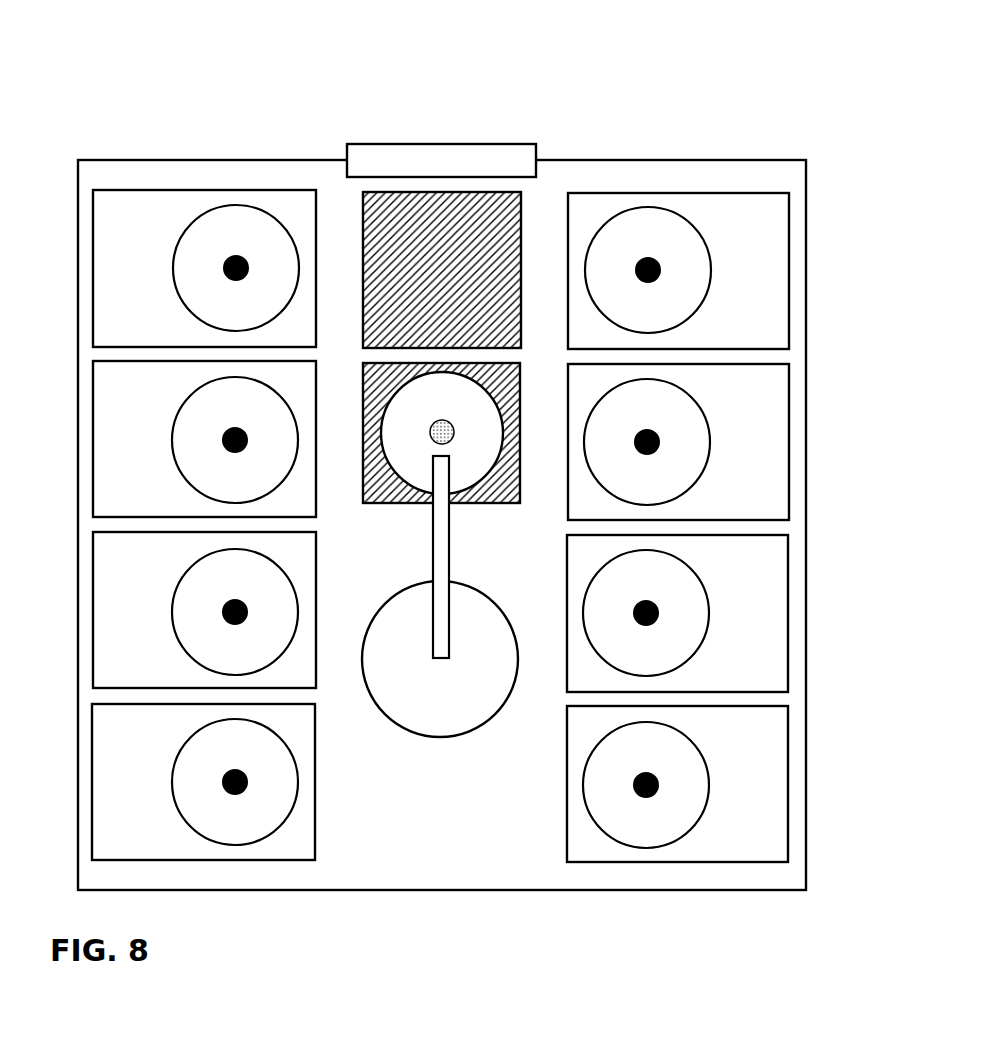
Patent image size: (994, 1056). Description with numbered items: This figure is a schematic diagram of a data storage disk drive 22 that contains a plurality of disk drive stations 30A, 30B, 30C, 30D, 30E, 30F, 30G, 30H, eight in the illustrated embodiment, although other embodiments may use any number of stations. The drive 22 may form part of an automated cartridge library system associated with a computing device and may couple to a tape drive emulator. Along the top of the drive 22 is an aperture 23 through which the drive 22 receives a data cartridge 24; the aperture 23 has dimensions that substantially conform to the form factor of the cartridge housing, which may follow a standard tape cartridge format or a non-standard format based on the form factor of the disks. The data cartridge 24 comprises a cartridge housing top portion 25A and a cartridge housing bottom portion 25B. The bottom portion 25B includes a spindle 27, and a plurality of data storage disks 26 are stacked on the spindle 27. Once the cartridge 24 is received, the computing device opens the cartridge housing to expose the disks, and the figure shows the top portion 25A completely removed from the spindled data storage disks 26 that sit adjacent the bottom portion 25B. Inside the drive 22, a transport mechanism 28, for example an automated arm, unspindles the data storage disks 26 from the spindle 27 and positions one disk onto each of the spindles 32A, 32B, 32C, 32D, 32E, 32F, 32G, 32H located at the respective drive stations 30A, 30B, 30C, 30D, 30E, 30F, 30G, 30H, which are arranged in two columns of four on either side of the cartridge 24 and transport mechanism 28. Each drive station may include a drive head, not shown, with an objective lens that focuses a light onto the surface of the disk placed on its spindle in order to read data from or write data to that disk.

The data storage disk drive 22 is at (207, 65).
The aperture 23 is at (458, 143).
The data cartridge 24 is at (439, 224).
The cartridge housing top portion 25A is at (378, 253).
The cartridge housing bottom portion 25B is at (378, 381).
The data storage disks 26 is at (465, 455).
The spindle 27 is at (442, 422).
The transport mechanism 28 is at (455, 705).
The disk drive station 30A is at (170, 253).
The disk drive station 30B is at (170, 424).
The disk drive station 30C is at (171, 595).
The disk drive station 30D is at (170, 767).
The disk drive station 30E is at (713, 256).
The disk drive station 30F is at (713, 420).
The disk drive station 30G is at (713, 591).
The disk drive station 30H is at (713, 761).
The spindle 32A is at (218, 268).
The spindle 32B is at (218, 440).
The spindle 32C is at (218, 612).
The spindle 32D is at (218, 782).
The spindle 32E is at (666, 270).
The spindle 32F is at (666, 442).
The spindle 32G is at (666, 613).
The spindle 32H is at (666, 785).